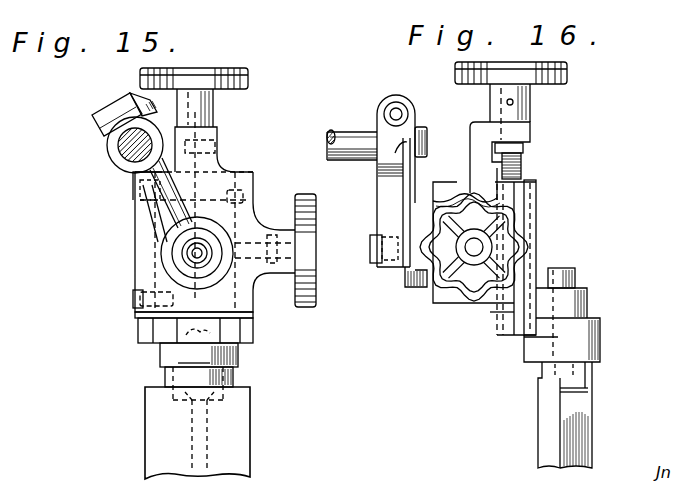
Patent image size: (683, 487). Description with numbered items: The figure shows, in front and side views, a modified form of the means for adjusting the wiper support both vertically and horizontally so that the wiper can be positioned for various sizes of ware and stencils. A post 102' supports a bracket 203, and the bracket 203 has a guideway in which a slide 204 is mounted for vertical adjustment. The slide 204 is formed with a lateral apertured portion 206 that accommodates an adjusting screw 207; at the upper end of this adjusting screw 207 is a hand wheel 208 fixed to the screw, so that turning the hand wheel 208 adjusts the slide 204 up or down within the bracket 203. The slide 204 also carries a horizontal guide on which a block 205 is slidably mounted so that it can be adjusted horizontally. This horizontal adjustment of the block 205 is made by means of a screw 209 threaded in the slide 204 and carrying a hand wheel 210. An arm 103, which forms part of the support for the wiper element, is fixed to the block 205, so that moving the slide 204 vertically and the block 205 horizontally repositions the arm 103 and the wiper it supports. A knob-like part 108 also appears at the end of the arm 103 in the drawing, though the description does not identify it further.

In FIG. 15, the post 102' is at (233, 411).
In FIG. 16, the post 102' is at (588, 368).
In FIG. 15, the arm 103 is at (136, 178).
In FIG. 16, the arm 103 is at (380, 190).
In FIG. 15, the handle knob 108 is at (116, 153).
In FIG. 16, the handle knob 108 is at (348, 130).
In FIG. 16, the bracket 203 is at (537, 249).
In FIG. 16, the slide 204 is at (470, 172).
In FIG. 15, the block 205 is at (140, 268).
In FIG. 16, the block 205 is at (438, 303).
In FIG. 15, the lateral apertured portion 206 is at (213, 136).
In FIG. 16, the lateral apertured portion 206 is at (531, 130).
In FIG. 16, the adjusting screw 207 is at (523, 165).
In FIG. 15, the hand wheel 208 is at (250, 76).
In FIG. 16, the hand wheel 208 is at (568, 75).
In FIG. 15, the screw 209 is at (258, 262).
In FIG. 15, the hand wheel 210 is at (312, 303).
In FIG. 16, the hand wheel 210 is at (505, 207).